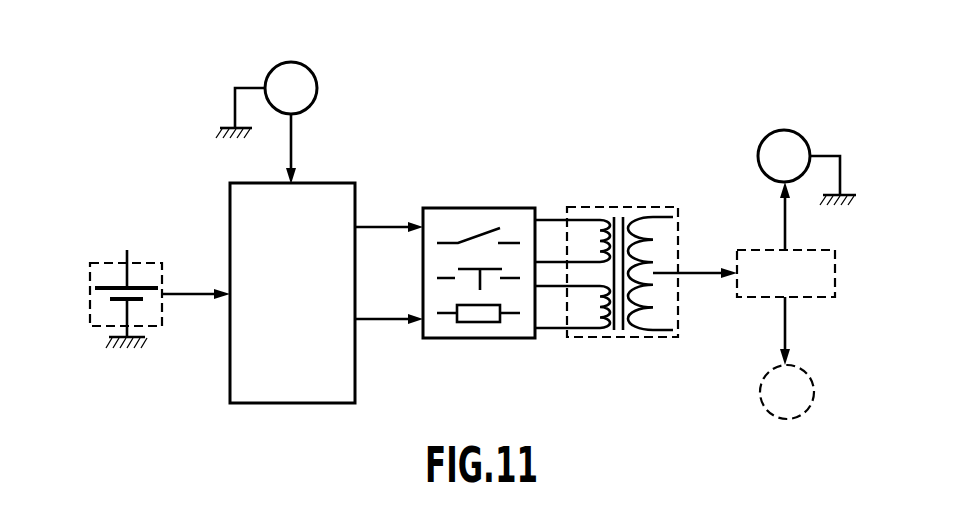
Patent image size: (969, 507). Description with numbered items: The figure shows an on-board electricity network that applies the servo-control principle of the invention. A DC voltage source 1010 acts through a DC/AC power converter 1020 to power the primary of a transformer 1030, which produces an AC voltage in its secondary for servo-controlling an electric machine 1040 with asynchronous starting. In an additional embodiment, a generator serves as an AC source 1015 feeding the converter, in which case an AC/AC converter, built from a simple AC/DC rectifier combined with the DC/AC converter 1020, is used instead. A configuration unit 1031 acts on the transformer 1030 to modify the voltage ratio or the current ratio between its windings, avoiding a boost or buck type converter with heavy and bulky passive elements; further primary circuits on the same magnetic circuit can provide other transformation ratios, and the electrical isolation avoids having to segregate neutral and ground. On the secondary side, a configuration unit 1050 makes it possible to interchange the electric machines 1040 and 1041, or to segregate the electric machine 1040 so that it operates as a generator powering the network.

The DC voltage source 1010 is at (150, 263).
The AC source 1015 is at (298, 63).
The DC/AC power converter 1020 is at (305, 385).
The transformer 1030 is at (640, 207).
The configuration unit 1031 is at (487, 208).
The electric machine 1040 is at (784, 131).
The electric machine 1041 is at (785, 419).
The configuration unit 1050 is at (808, 288).